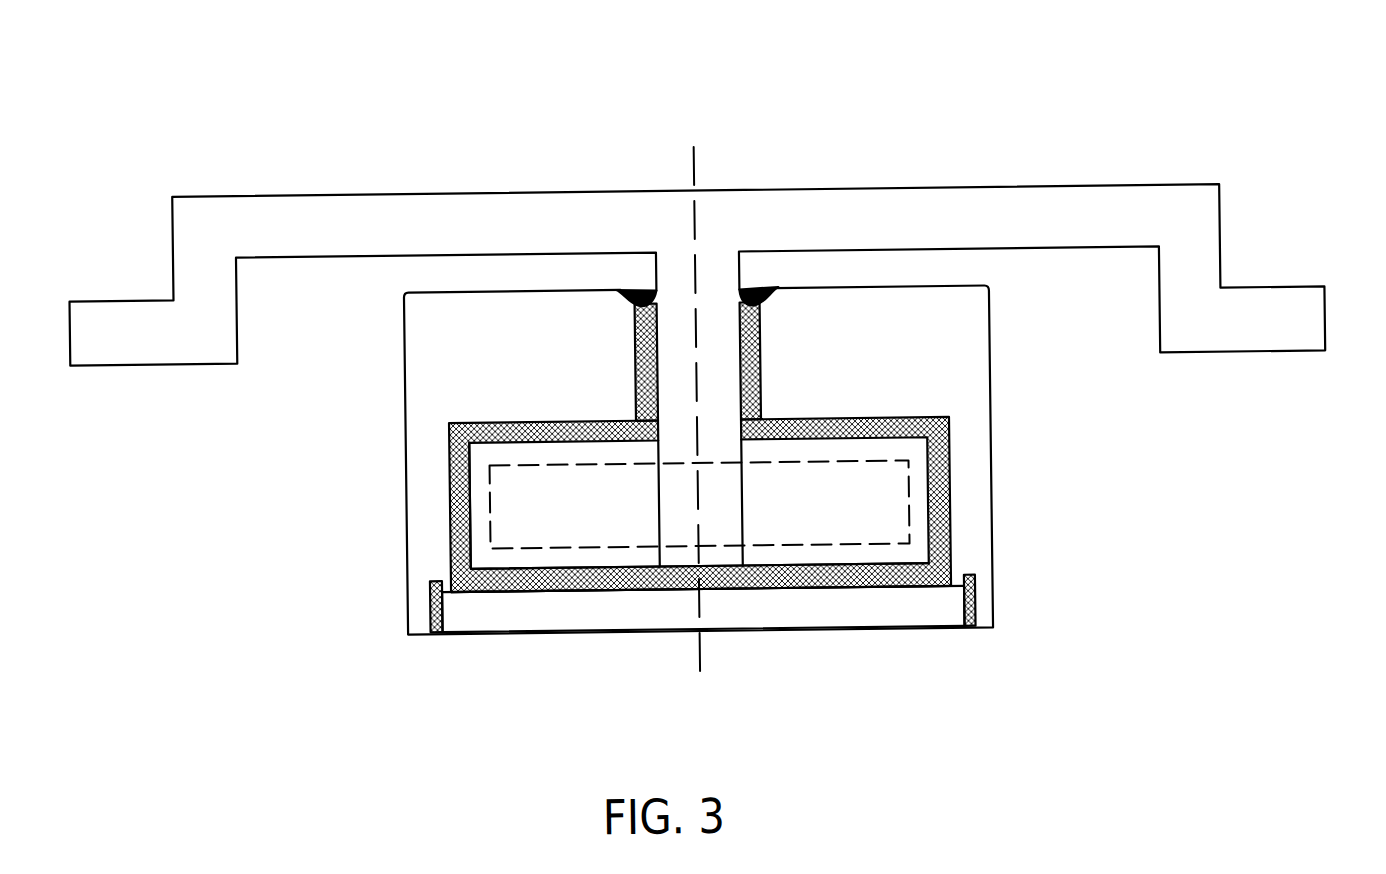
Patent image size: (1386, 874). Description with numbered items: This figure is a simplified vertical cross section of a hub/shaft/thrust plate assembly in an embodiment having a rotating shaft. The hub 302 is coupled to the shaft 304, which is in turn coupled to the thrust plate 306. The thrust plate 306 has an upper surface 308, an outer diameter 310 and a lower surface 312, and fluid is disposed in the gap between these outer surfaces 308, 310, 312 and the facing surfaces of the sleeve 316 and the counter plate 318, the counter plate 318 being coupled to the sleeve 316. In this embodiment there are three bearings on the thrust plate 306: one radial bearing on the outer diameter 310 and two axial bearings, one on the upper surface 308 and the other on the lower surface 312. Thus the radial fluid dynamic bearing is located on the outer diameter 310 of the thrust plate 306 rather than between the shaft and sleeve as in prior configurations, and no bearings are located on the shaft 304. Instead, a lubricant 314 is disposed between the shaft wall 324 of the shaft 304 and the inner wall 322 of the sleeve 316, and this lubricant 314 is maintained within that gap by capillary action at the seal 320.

The hub 302 is at (1189, 236).
The shaft 304 is at (719, 320).
The thrust plate 306 is at (901, 502).
The upper surface of thrust plate 308 is at (880, 439).
The outer diameter of thrust plate 310 is at (949, 543).
The lower surface of thrust plate 312 is at (848, 590).
The lubricant 314 is at (575, 420).
The sleeve 316 is at (459, 335).
The counter plate 318 is at (525, 616).
The seal 320 is at (638, 296).
The inner wall of sleeve 322 is at (763, 371).
The shaft wall 324 is at (636, 362).